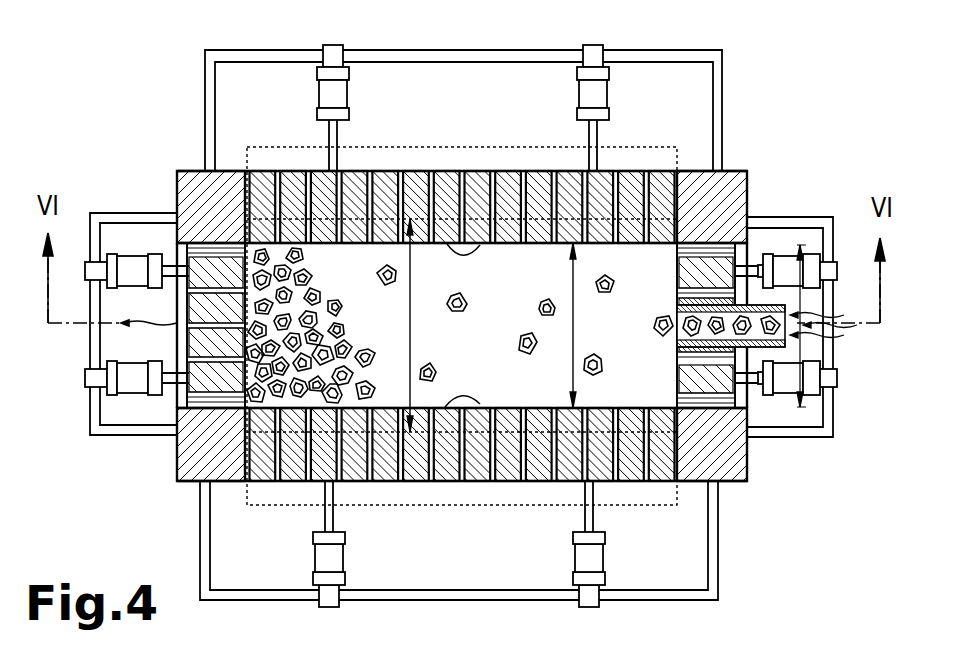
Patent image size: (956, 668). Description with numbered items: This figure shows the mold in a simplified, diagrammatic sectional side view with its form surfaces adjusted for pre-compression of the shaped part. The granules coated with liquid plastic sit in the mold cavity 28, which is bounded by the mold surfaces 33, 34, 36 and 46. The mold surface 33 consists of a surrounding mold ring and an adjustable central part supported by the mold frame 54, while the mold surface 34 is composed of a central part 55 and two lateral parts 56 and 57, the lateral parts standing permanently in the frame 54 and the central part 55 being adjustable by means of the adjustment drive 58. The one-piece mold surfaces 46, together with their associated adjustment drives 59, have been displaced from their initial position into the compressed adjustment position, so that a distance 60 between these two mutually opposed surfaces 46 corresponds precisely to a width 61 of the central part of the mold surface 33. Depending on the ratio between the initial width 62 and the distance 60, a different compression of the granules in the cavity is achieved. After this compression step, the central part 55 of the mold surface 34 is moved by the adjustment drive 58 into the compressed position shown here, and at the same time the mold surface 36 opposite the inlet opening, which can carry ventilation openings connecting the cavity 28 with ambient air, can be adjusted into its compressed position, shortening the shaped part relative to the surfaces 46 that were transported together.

The mold cavity 28 is at (537, 268).
The mold surface 33 is at (507, 300).
The mold surface 34 is at (190, 343).
The mold surface 36 is at (675, 268).
The mold surfaces 46 is at (447, 243).
The mold frame 54 is at (140, 214).
The central part 55 is at (718, 243).
The lateral part 56 is at (760, 463).
The lateral part 57 is at (738, 152).
The adjustment drive 58 is at (812, 253).
The adjustment drives 59 is at (333, 98).
The distance 60 is at (800, 347).
The width 61 is at (573, 315).
The initial width 62 is at (416, 307).